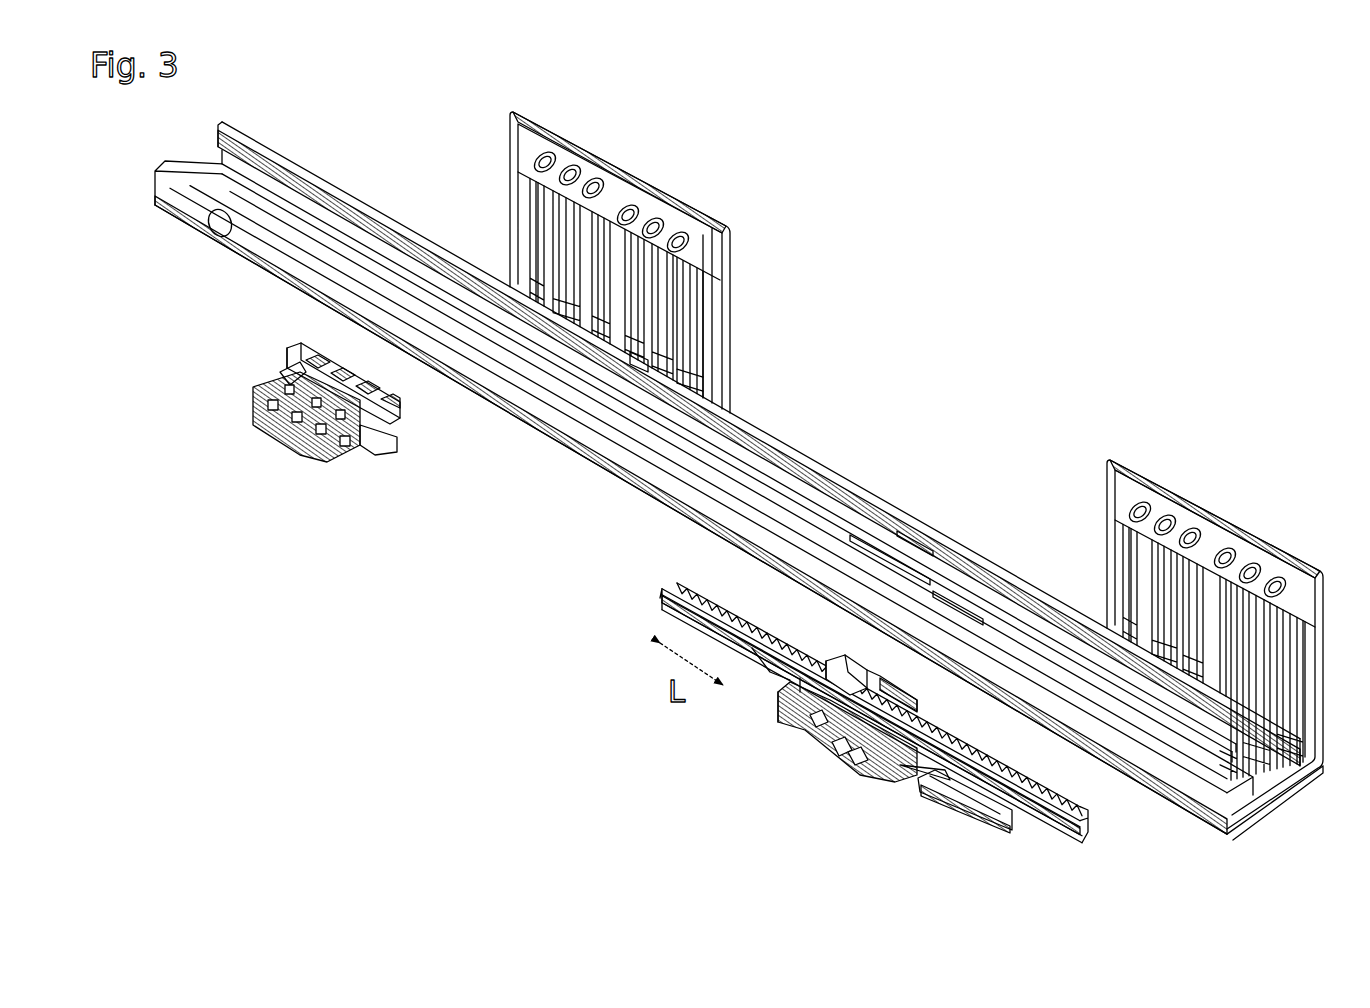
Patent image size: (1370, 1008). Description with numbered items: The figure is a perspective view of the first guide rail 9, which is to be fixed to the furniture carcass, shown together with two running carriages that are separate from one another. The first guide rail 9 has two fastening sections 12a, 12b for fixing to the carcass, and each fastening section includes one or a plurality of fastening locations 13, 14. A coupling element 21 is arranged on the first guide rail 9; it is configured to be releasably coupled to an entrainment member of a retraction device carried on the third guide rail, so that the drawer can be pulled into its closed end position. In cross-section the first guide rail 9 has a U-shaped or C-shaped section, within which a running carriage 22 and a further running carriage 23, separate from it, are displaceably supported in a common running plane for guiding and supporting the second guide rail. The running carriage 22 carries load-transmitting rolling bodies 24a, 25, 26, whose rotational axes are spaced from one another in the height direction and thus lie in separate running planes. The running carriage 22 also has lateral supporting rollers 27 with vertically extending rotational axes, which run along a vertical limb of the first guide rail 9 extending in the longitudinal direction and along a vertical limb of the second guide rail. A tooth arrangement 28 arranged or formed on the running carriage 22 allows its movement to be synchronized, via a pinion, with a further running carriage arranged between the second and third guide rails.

The first guide rail 9 is at (583, 462).
The fastening section 12a is at (635, 165).
The fastening section 12b is at (1213, 505).
The fastening location 13 is at (680, 215).
The fastening location 14 is at (1257, 565).
The coupling element 21 is at (693, 368).
The running carriage 22 is at (831, 733).
The further running carriage 23 is at (278, 452).
The load-transmitting rolling body 24a is at (992, 820).
The load-transmitting rolling body 25 is at (800, 725).
The load-transmitting rolling body 26 is at (870, 688).
The lateral supporting roller 27 is at (847, 763).
The tooth arrangement 28 is at (680, 588).